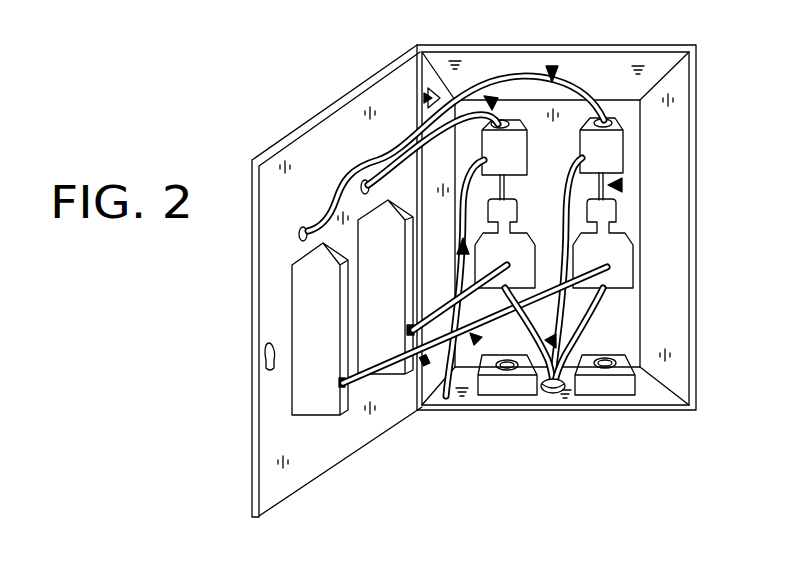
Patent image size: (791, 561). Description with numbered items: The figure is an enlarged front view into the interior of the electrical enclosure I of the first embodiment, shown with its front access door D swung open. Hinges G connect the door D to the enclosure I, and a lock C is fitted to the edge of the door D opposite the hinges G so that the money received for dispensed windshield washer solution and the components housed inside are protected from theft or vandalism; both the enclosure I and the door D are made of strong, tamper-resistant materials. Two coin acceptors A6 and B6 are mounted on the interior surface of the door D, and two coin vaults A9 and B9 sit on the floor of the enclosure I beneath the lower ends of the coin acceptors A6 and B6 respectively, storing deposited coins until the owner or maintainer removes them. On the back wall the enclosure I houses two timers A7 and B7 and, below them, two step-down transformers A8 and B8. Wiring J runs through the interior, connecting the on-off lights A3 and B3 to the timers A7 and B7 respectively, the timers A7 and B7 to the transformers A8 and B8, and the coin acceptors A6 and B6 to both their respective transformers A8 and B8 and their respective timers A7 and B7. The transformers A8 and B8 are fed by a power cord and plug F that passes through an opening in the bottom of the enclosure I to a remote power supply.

The on-off light A3 is at (364, 183).
The on-off light B3 is at (300, 236).
The coin acceptor A6 is at (386, 305).
The coin acceptor B6 is at (320, 350).
The timer A7 is at (500, 125).
The timer B7 is at (624, 152).
The step-down transformer A8 is at (524, 248).
The step-down transformer B8 is at (625, 258).
The coin vault A9 is at (516, 396).
The coin vault B9 is at (607, 386).
The lock C is at (263, 358).
The front access door D is at (255, 168).
The power cord and plug F is at (565, 342).
The hinges G is at (424, 98).
The electrical enclosure I is at (687, 90).
The wiring J is at (552, 70).